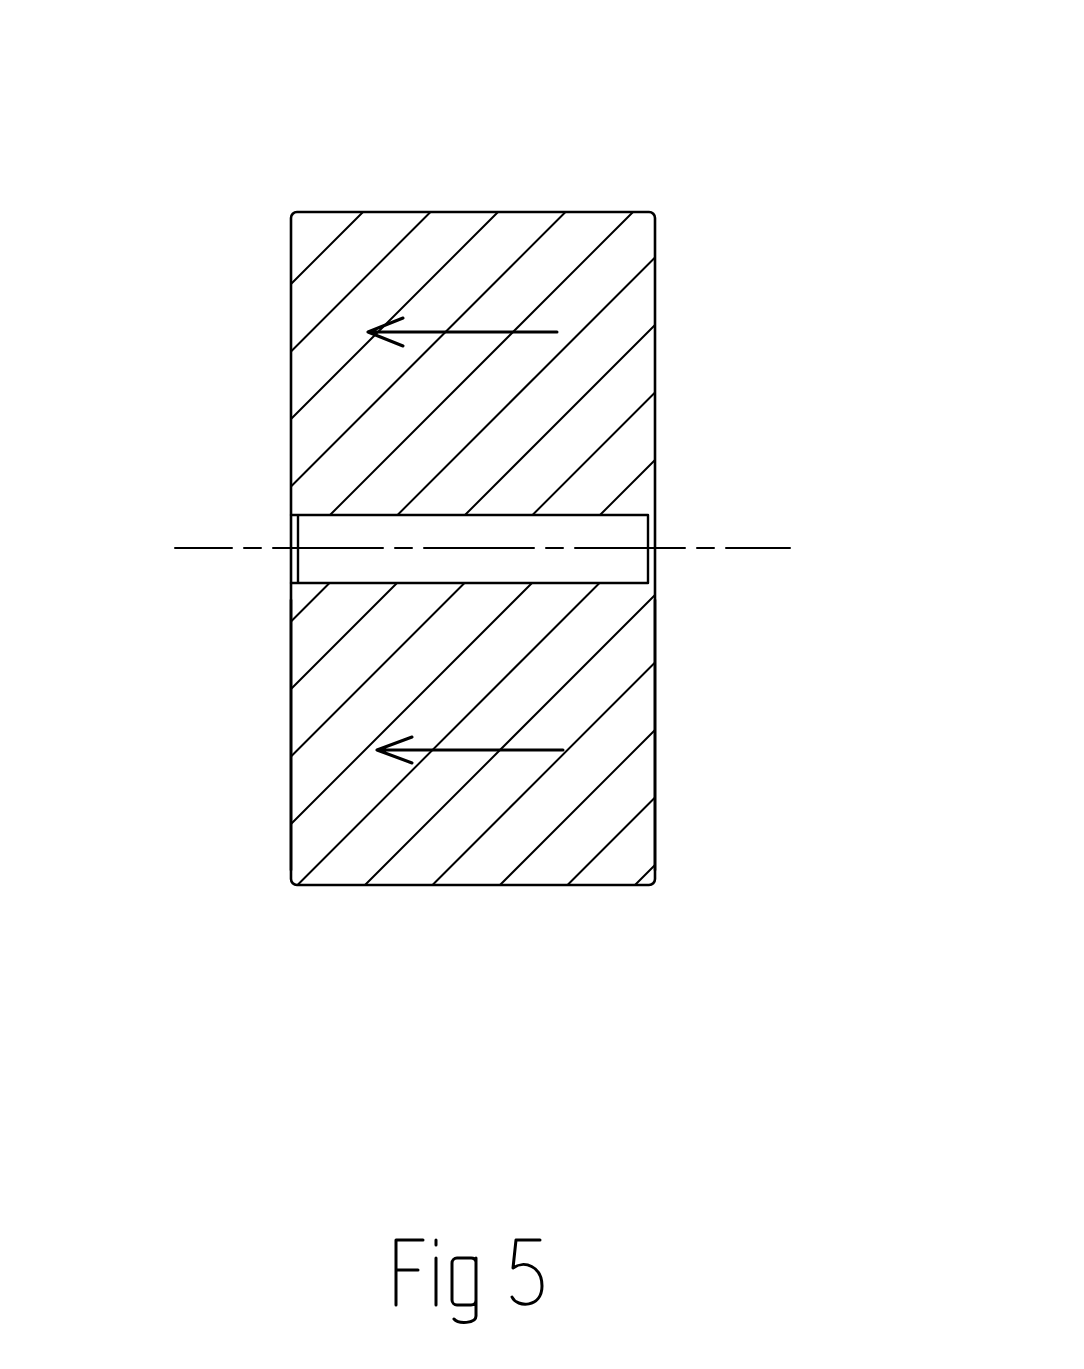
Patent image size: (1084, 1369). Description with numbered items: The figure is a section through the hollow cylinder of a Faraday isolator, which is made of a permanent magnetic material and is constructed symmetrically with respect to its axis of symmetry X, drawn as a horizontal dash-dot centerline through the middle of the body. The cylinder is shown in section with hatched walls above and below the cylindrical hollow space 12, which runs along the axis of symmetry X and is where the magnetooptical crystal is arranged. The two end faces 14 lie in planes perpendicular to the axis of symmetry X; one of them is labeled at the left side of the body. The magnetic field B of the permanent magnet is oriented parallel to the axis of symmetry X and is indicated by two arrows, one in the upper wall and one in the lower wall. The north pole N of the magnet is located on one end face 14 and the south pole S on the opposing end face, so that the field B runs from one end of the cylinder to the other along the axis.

The end face 14 is at (290, 347).
The cylindrical hollow space 12 is at (615, 545).
The magnetic field B is at (692, 1119).
The axis of symmetry X is at (118, 623).
The south pole S is at (225, 828).
The north pole N is at (712, 776).